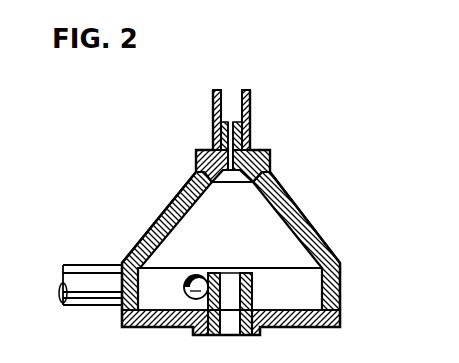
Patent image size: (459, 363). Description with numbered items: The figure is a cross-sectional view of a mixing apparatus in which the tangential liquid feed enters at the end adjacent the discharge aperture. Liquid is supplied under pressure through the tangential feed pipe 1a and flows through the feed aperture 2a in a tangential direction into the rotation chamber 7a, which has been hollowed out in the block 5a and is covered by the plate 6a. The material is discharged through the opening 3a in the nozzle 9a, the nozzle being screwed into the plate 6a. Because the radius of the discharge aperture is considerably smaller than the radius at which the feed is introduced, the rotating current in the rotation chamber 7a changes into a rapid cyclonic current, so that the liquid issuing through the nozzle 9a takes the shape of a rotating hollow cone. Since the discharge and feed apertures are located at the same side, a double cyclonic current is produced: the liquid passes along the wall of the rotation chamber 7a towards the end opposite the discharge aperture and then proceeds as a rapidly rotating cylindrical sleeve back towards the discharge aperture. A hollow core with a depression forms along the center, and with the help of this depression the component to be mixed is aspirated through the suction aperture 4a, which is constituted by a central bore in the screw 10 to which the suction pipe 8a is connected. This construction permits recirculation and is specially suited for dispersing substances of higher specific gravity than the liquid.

The suction pipe 8a is at (250, 117).
The suction aperture 4a is at (218, 140).
The screw 10 is at (270, 160).
The rotation chamber 7a is at (202, 210).
The block 5a is at (312, 242).
The tangential feed pipe 1a is at (97, 282).
The feed aperture 2a is at (198, 275).
The nozzle 9a is at (248, 304).
The opening 3a is at (227, 322).
The plate 6a is at (297, 318).